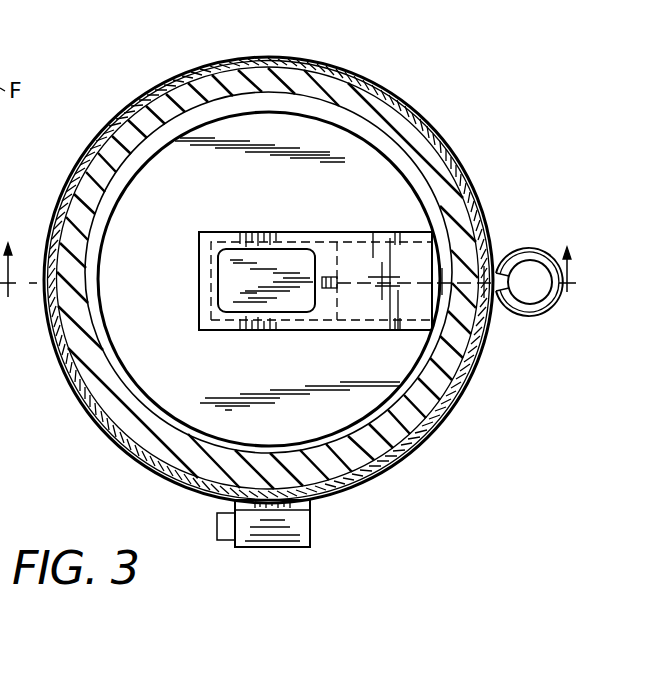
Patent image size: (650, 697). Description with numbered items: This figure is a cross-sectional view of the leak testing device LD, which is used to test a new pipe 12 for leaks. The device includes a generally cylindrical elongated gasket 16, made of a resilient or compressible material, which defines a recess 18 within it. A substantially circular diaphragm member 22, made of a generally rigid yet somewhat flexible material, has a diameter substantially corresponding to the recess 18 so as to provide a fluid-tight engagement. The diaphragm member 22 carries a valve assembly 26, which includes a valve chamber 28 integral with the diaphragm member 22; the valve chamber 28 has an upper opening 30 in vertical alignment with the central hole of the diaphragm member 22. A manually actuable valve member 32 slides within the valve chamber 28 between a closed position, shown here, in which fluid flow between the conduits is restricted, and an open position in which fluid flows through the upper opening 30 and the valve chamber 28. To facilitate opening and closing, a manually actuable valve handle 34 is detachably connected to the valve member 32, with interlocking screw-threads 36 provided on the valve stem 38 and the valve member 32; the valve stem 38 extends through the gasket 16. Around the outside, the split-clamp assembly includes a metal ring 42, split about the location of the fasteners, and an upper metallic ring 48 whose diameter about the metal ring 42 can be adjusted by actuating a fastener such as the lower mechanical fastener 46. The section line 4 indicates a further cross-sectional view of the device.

The leak testing device LD is at (438, 58).
The section line 4- 4 is at (576, 269).
The new pipe 12 is at (127, 186).
The gasket 16 is at (405, 106).
The recess 18 is at (408, 163).
The diaphragm member 22 is at (240, 199).
The valve assembly 26 is at (345, 222).
The valve chamber 28 is at (284, 232).
The upper opening 30 is at (223, 293).
The valve member 32 is at (248, 292).
The valve handle 34 is at (525, 248).
The interlocking screw-threads 36 is at (329, 291).
The valve stem 38 is at (385, 273).
The metal ring 42 is at (433, 420).
The lower mechanical fastener 46 is at (310, 537).
The upper metallic ring 48 is at (420, 450).